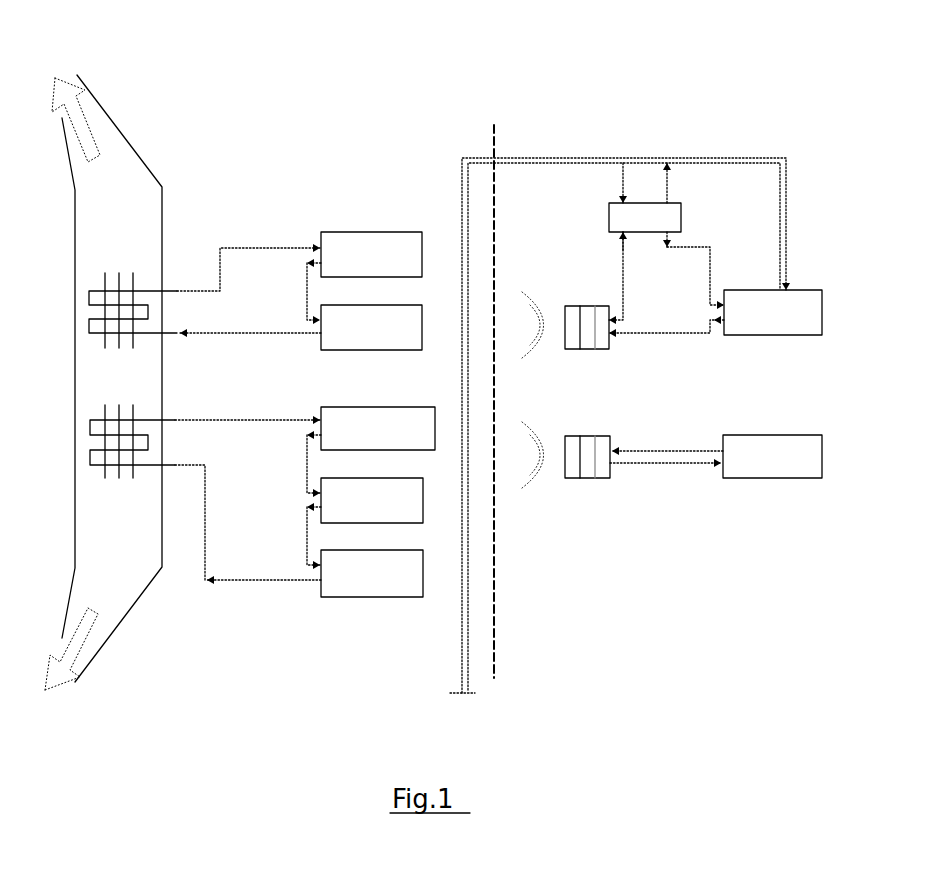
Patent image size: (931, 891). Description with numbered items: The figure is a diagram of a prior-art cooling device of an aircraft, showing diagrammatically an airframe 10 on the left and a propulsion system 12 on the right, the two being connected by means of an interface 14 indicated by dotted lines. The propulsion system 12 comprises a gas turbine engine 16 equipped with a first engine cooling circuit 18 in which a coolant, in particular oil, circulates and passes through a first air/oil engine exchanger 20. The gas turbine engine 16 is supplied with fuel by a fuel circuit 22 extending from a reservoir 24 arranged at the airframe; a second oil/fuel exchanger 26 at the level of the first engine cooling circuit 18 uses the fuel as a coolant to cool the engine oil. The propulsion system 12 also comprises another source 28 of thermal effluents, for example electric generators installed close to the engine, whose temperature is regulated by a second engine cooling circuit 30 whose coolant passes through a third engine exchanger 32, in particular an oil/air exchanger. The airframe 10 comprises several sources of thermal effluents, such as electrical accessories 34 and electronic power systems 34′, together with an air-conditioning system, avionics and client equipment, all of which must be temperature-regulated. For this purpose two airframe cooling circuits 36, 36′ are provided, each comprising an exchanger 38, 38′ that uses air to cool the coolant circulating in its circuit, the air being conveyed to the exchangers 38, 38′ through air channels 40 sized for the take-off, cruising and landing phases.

The airframe 10 is at (245, 28).
The propulsion system 12 is at (625, 28).
The interface 14 is at (494, 137).
The gas turbine engine 16 is at (735, 335).
The first engine cooling circuit 18 is at (703, 247).
The first air/oil engine exchanger 20 is at (583, 349).
The fuel circuit 22 is at (678, 158).
The reservoir 24 is at (470, 693).
The second oil/fuel exchanger 26 is at (609, 213).
The source of thermal effluents 28 is at (742, 478).
The second engine cooling circuit 30 is at (655, 463).
The third engine exchanger 32 is at (600, 478).
The electrical accessories 34 is at (355, 232).
The electronic power systems 34′ is at (360, 350).
The airframe cooling circuit 36 is at (268, 248).
The airframe cooling circuit 36′ is at (268, 420).
The exchanger 38 is at (104, 282).
The exchanger 38′ is at (92, 420).
The air channels 40 is at (75, 504).